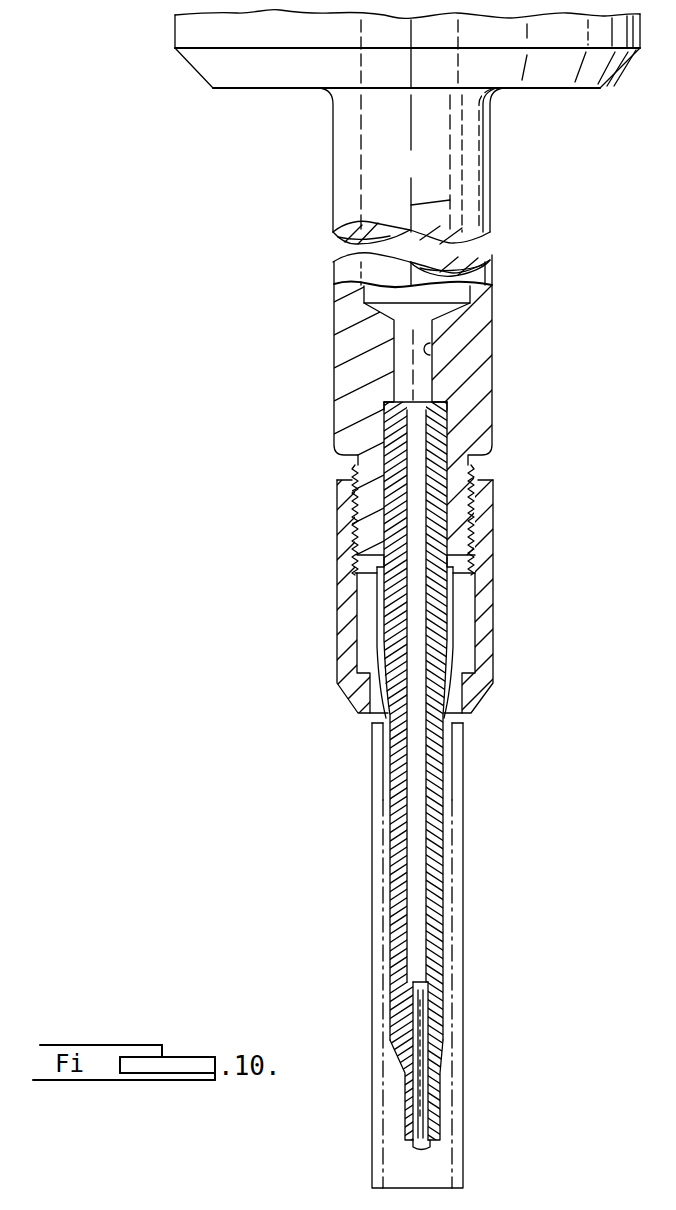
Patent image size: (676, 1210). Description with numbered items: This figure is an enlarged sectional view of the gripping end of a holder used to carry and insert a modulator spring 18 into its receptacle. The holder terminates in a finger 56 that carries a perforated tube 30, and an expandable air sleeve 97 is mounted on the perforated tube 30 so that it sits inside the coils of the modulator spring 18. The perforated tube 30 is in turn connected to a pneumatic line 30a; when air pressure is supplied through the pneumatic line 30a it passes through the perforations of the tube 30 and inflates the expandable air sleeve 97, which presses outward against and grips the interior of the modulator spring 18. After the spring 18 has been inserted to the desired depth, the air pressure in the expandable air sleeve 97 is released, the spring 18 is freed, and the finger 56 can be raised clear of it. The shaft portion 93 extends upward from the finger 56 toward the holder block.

The handle shaft 93 is at (412, 206).
The pneumatic line 30a is at (431, 352).
The finger 56 is at (478, 397).
The perforated tube 30 is at (433, 837).
The modulator spring 18 is at (460, 892).
The expandable air sleeve 97 is at (440, 967).